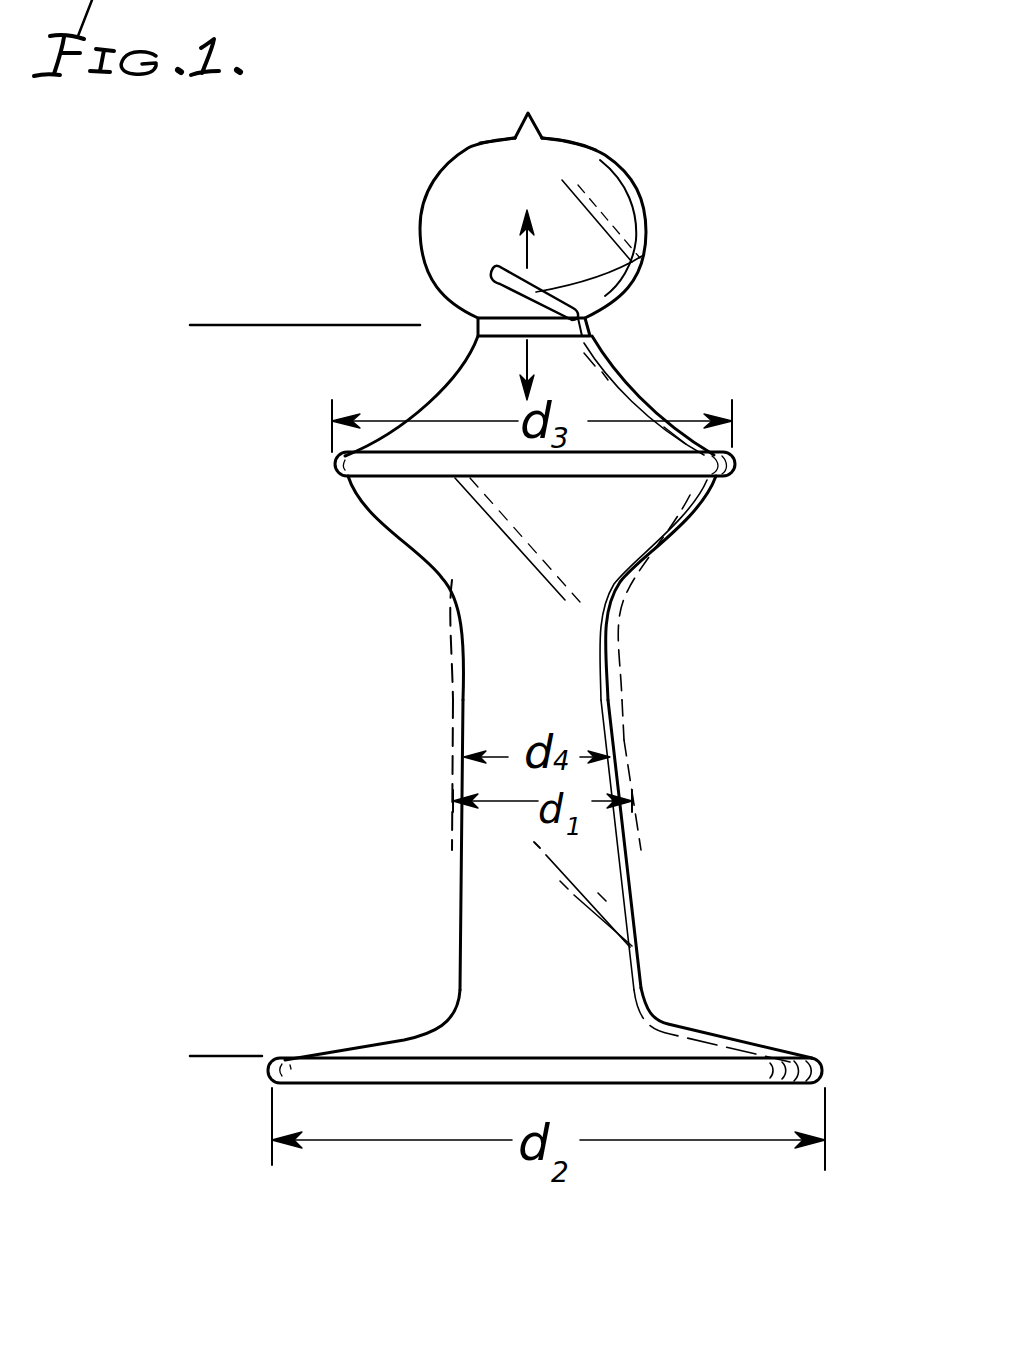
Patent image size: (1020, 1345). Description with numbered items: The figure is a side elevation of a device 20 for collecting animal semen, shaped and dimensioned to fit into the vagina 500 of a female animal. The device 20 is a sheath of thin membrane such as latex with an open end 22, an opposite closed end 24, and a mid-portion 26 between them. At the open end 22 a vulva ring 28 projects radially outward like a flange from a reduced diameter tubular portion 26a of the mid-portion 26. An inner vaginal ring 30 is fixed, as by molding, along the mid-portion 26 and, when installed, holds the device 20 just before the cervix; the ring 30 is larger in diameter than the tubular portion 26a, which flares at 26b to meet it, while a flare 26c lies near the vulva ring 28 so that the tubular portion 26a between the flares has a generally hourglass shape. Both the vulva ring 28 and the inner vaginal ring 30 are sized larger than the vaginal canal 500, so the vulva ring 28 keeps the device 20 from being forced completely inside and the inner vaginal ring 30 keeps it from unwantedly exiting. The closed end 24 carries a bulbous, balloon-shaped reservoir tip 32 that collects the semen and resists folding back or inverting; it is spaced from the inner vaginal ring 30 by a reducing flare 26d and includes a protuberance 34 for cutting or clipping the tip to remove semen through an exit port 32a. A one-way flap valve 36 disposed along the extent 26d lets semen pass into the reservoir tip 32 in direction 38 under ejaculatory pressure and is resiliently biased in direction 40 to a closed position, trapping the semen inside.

The device for collecting animal semen 20 is at (786, 415).
The open end 22 is at (580, 1082).
The closed end 24 is at (529, 115).
The mid-portion 26 is at (222, 325).
The reduced diameter tubular portion 26a is at (638, 899).
The flare 26b is at (673, 547).
The flare 26c is at (378, 1040).
The reducing flare 26d is at (636, 392).
The vulva ring 28 is at (752, 1068).
The inner vaginal ring 30 is at (662, 463).
The reservoir tip 32 is at (646, 212).
The exit port 32a is at (545, 137).
The protuberance 34 is at (516, 137).
The one-way flap valve 36 is at (538, 284).
The direction 38 is at (522, 256).
The direction 40 is at (522, 352).
The vagina 500 is at (622, 690).